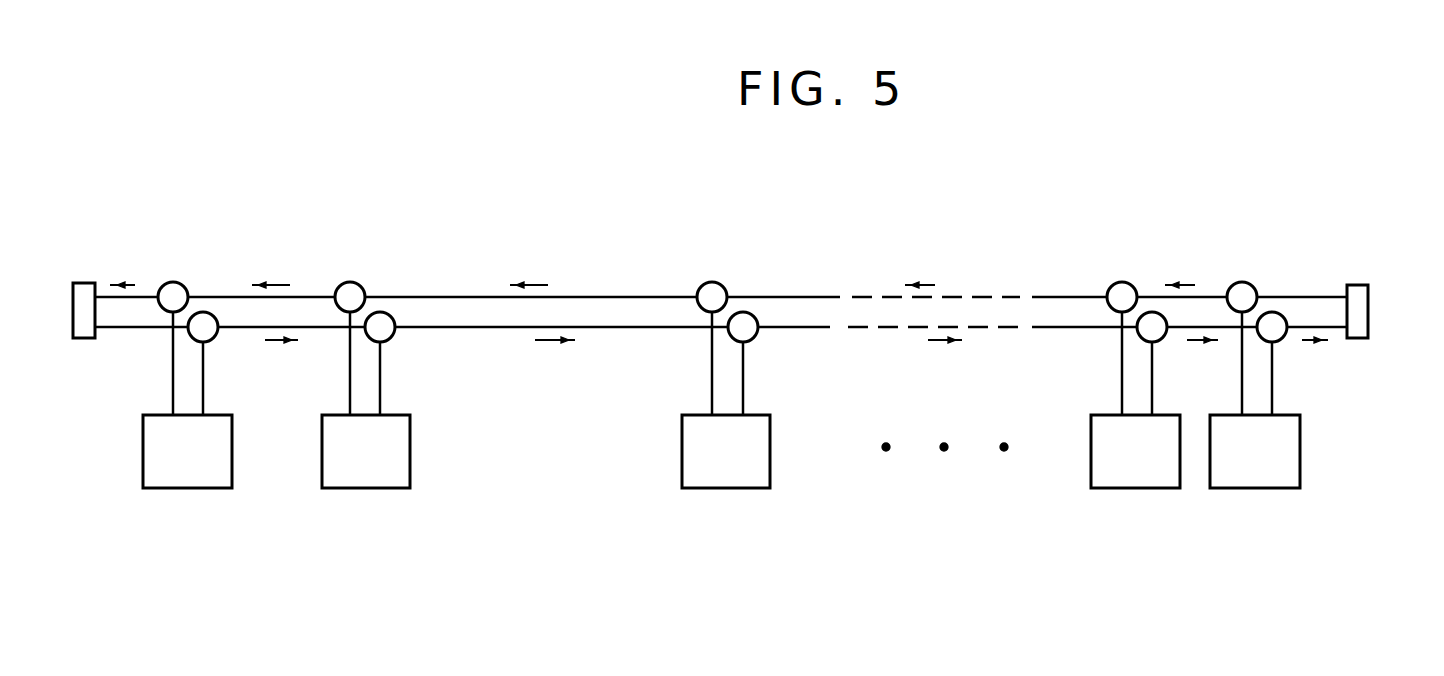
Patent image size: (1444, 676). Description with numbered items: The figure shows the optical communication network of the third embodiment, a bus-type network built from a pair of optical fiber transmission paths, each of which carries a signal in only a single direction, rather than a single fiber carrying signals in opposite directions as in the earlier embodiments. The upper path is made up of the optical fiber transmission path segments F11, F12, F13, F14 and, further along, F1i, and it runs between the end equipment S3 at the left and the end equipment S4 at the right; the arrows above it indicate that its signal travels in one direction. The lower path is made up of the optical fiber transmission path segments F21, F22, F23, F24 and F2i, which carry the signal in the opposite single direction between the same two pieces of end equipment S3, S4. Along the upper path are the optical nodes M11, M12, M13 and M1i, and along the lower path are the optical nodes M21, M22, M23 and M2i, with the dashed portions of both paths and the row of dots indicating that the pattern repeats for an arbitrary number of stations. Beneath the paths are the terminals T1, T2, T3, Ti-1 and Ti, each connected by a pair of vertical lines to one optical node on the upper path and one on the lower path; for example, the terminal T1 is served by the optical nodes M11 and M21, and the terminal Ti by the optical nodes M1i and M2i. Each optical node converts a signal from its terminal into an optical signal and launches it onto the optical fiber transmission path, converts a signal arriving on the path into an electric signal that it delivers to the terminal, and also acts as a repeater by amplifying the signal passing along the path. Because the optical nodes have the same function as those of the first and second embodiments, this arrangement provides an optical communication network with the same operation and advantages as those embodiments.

The end equipment S3 is at (88, 283).
The end equipment S4 is at (1360, 285).
The optical fiber transmission path F11 is at (143, 297).
The optical fiber transmission path F12 is at (308, 297).
The optical fiber transmission path F13 is at (613, 297).
The optical fiber transmission path F14 is at (823, 297).
The optical fiber transmission path F1i is at (1211, 292).
The optical fiber transmission path F21 is at (128, 330).
The optical fiber transmission path F22 is at (323, 330).
The optical fiber transmission path F23 is at (616, 330).
The optical fiber transmission path F24 is at (820, 330).
The optical fiber transmission path F2i is at (1175, 330).
The optical node M11 is at (177, 282).
The optical node M12 is at (353, 282).
The optical node M13 is at (716, 282).
The optical node M1i is at (1244, 282).
The optical node M21 is at (216, 337).
The optical node M22 is at (394, 335).
The optical node M23 is at (756, 335).
The optical node M2i is at (1285, 337).
The terminal T1 is at (190, 490).
The terminal T2 is at (368, 490).
The terminal T3 is at (728, 490).
The terminal Ti-1 is at (1138, 490).
The terminal Ti is at (1258, 490).